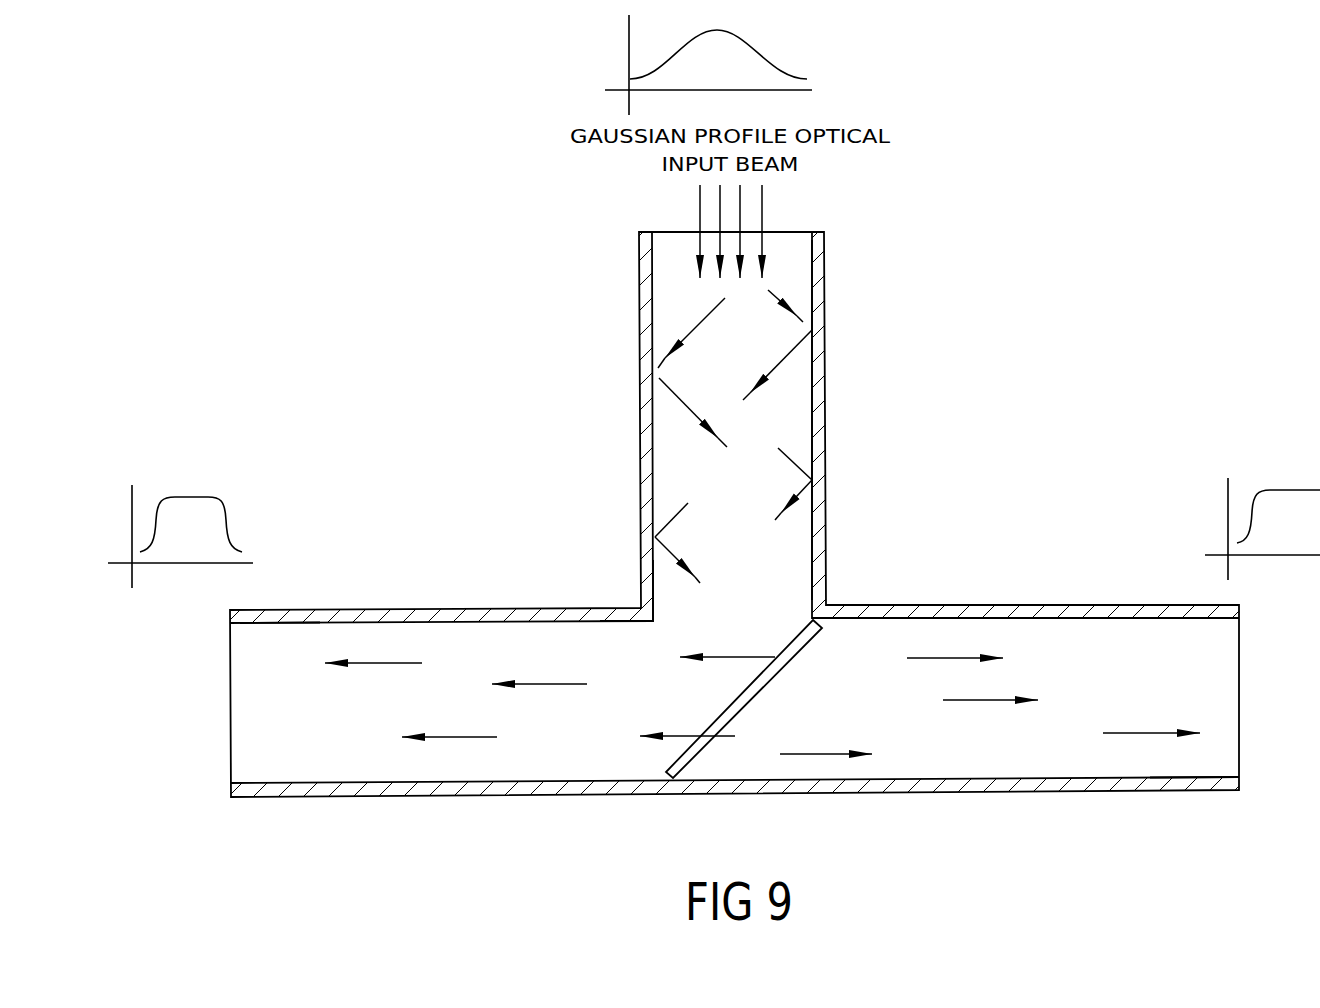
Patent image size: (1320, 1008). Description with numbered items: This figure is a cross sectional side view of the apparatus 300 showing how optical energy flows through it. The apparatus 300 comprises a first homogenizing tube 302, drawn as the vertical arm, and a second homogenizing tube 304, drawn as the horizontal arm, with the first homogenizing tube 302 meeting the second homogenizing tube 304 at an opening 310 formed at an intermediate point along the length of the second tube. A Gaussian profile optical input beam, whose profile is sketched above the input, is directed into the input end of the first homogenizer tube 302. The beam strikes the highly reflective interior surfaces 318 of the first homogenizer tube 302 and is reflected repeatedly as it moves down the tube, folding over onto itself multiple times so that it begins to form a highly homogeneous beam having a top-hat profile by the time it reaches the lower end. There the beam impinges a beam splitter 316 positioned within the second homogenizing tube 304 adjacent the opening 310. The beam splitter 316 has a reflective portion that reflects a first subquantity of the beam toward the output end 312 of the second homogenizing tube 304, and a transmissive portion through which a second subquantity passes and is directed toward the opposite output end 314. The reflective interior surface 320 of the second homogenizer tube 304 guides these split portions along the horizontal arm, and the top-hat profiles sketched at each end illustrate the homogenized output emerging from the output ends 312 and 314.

The apparatus 300 is at (418, 474).
The first homogenizing tube 302 is at (638, 448).
The second homogenizing tube 304 is at (978, 795).
The opening 310 is at (654, 614).
The output end 312 is at (258, 620).
The output end 314 is at (1190, 607).
The beam splitter 316 is at (693, 754).
The interior surface 318 is at (812, 296).
The interior surface 320 is at (281, 623).